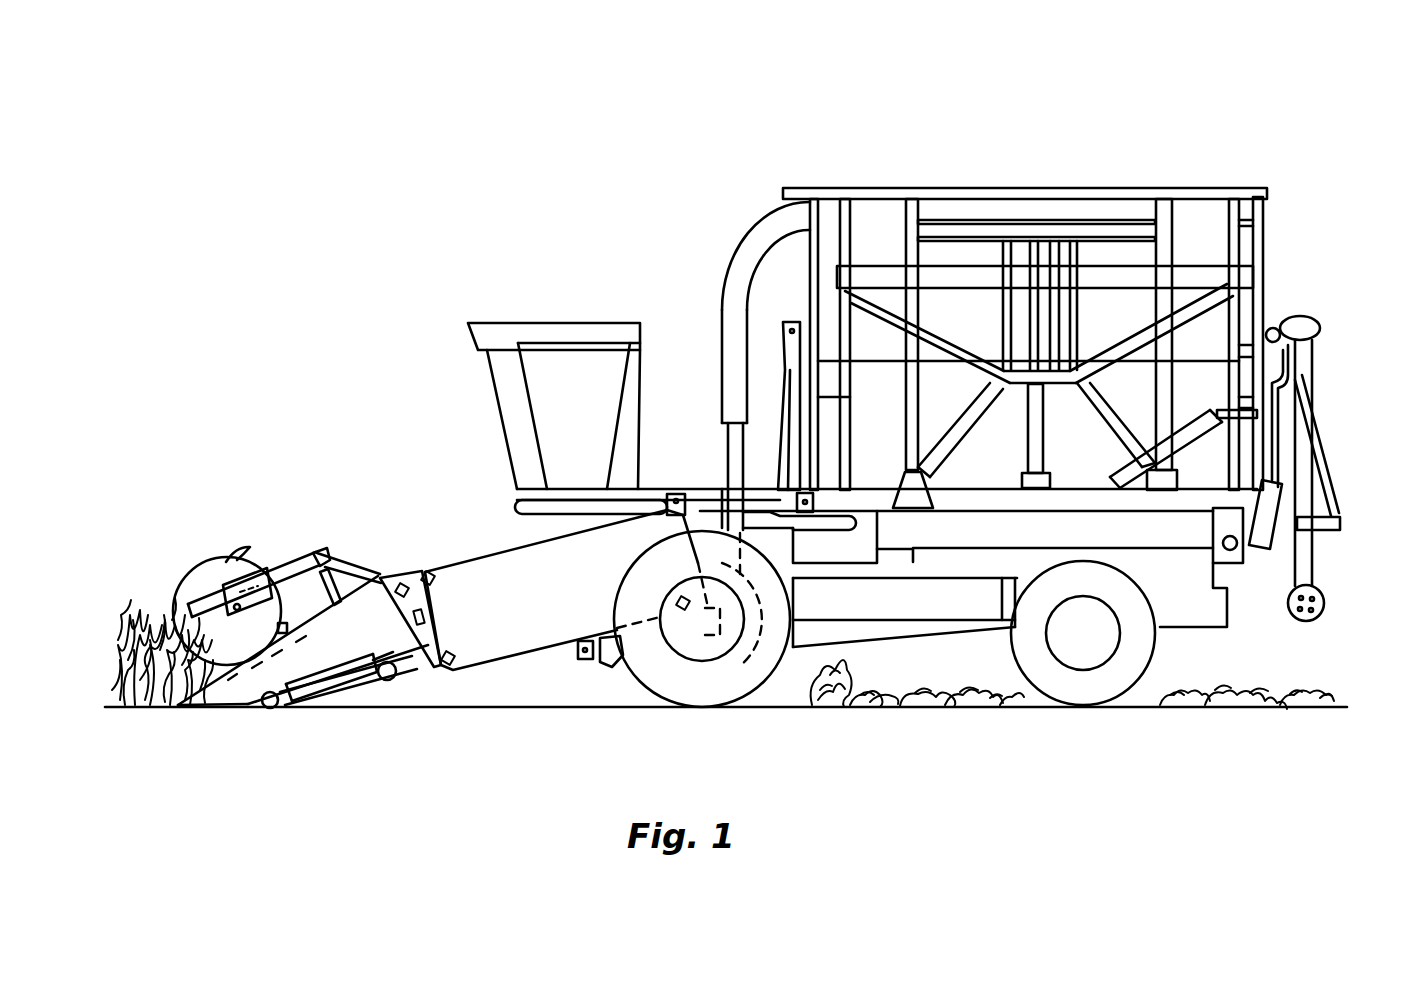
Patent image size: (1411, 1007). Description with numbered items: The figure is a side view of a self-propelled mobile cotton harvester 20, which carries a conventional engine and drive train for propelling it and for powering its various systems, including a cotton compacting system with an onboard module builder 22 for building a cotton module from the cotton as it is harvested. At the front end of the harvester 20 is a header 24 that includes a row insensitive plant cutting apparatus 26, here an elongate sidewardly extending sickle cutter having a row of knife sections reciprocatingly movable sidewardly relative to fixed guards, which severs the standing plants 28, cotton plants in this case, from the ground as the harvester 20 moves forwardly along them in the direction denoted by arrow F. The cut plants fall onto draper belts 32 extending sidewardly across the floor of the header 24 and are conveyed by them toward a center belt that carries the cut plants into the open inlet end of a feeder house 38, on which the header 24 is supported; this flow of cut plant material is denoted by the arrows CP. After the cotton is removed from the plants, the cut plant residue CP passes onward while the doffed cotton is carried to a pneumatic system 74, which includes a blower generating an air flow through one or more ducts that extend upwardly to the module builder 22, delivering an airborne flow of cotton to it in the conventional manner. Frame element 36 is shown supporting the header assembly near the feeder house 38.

The cotton harvester 20 is at (1236, 116).
The module builder 22 is at (1272, 226).
The header 24 is at (290, 547).
The row insensitive plant cutting apparatus 26 is at (263, 707).
The standing plants 28 is at (140, 612).
The draper belts 32 is at (330, 667).
The frame / base cutter assembly 36 is at (418, 563).
The feeder house 38 is at (517, 672).
The pneumatic system 74 is at (722, 368).
The cut plant residue CP is at (926, 700).
The forward direction arrow F is at (380, 240).